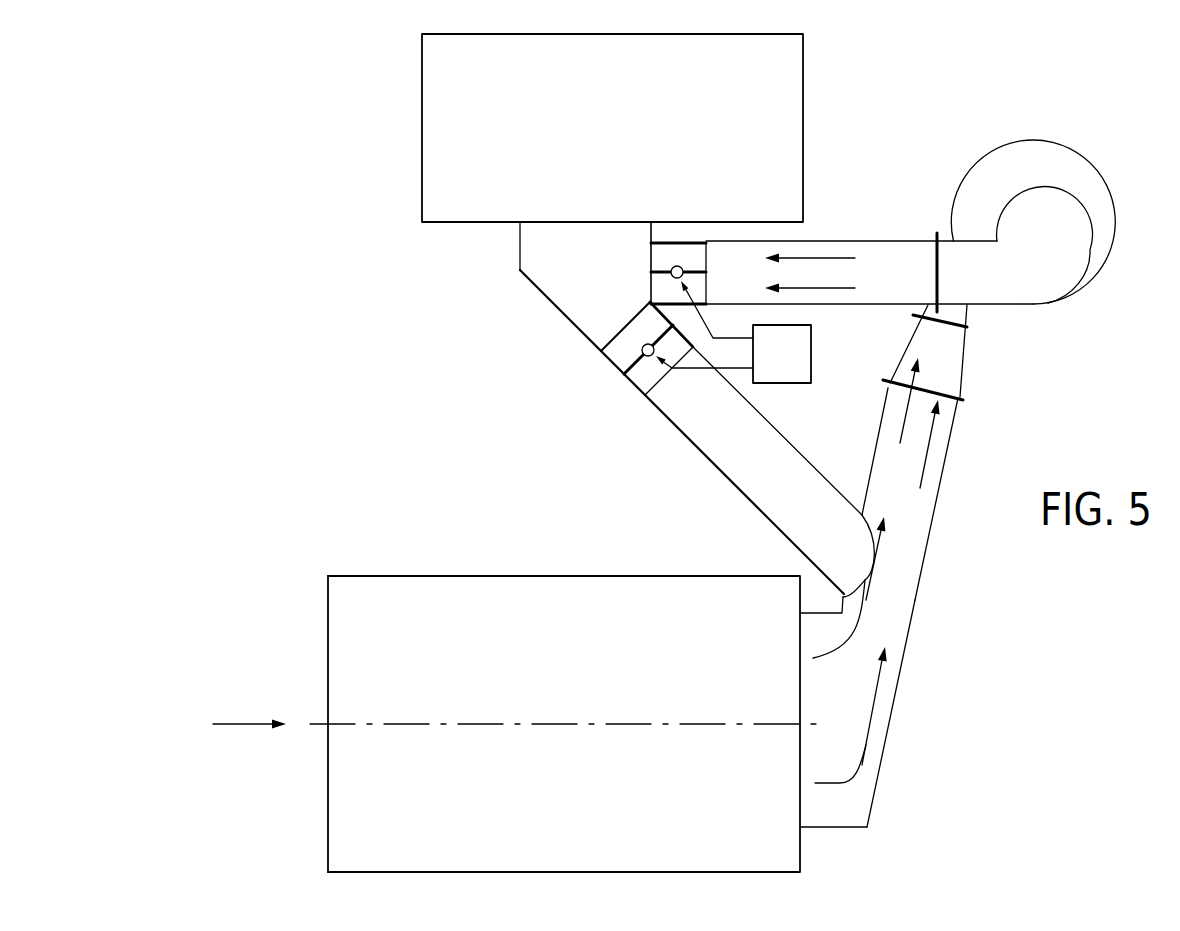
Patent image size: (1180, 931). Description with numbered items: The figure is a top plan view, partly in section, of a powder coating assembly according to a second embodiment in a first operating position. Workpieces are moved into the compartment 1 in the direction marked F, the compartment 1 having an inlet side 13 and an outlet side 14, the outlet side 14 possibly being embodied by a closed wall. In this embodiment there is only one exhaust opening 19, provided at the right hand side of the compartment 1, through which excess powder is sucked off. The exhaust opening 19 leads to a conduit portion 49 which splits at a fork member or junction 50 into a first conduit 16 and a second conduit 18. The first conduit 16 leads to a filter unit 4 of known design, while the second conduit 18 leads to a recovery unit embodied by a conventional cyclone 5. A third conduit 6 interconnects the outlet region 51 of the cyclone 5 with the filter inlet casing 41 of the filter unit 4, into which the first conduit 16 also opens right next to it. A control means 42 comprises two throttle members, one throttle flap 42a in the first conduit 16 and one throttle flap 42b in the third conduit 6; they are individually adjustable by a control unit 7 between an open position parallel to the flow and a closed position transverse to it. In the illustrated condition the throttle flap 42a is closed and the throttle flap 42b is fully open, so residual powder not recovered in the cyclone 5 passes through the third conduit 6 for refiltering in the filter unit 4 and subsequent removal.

The compartment 1 is at (383, 552).
The filter unit 4 is at (611, 131).
The cyclone 5 is at (1085, 144).
The outlet region 51 is at (1057, 217).
The third conduit 6 is at (870, 252).
The control unit 7 is at (792, 366).
The inlet side 13 is at (328, 846).
The outlet side 14 is at (803, 848).
The first conduit 16 is at (707, 432).
The second conduit 18 is at (925, 493).
The exhaust opening 19 is at (803, 742).
The filter inlet casing 41 is at (528, 246).
The control means 42 is at (630, 299).
The throttle flap 42a is at (640, 357).
The throttle flap 42b is at (667, 265).
The conduit portion 49 is at (905, 672).
The fork member 50 is at (865, 585).
The direction of workpiece movement F is at (226, 722).